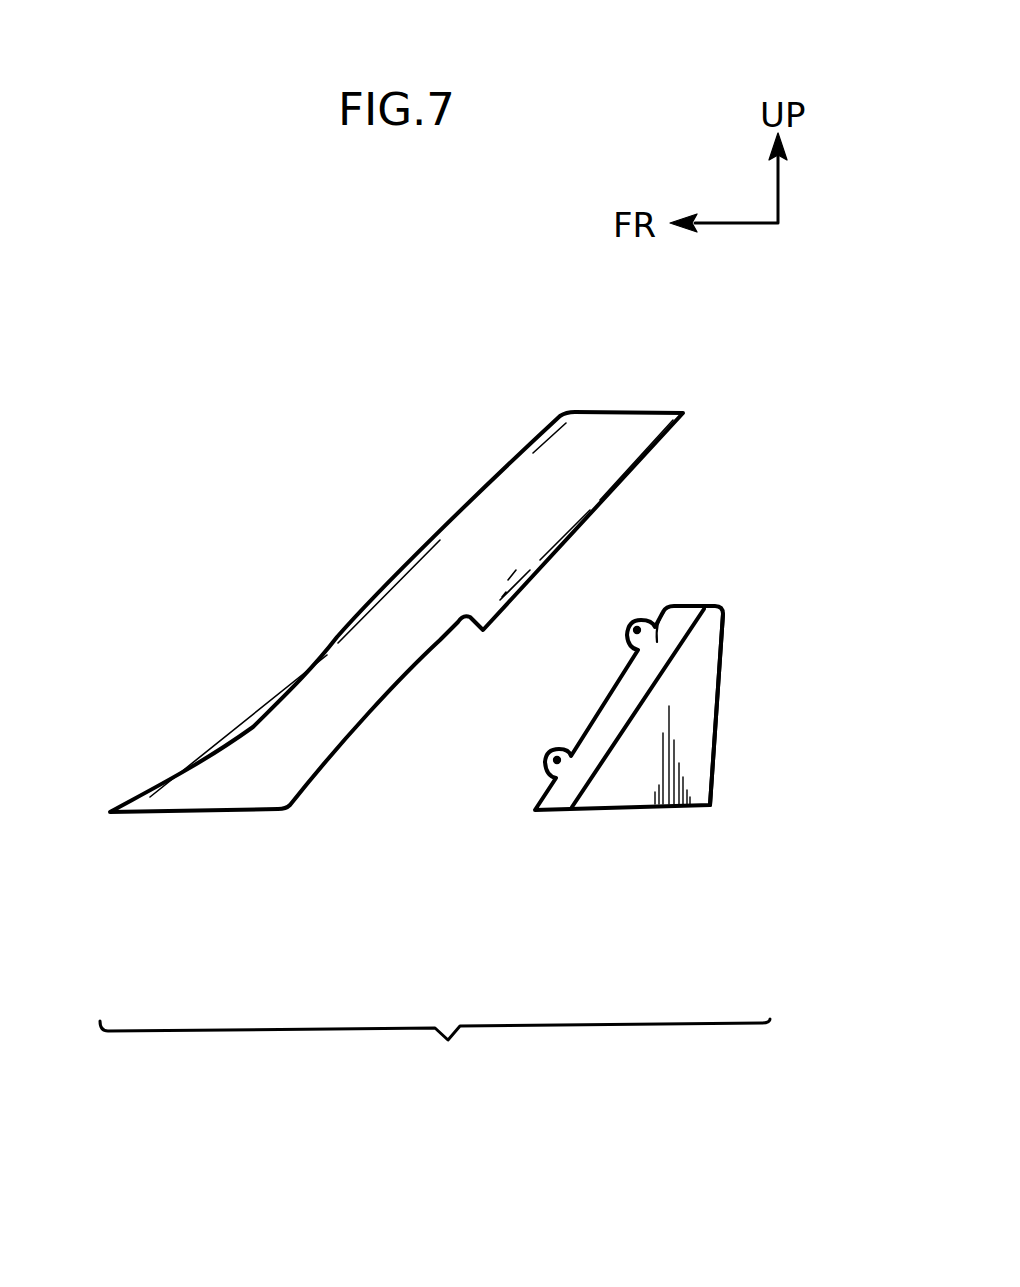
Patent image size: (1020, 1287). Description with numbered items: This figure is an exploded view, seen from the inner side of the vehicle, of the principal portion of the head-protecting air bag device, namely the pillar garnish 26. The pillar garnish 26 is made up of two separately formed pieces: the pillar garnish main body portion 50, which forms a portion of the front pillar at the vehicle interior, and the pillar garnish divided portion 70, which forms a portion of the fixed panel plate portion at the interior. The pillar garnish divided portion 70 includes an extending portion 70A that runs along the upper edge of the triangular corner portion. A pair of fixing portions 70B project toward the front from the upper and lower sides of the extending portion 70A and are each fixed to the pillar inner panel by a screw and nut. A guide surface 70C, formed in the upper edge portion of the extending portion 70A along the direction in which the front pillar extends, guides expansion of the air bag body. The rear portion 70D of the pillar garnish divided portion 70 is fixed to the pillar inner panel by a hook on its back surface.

The pillar garnish 26 is at (527, 928).
The pillar garnish main body portion 50 is at (253, 826).
The pillar garnish divided portion 70 is at (604, 829).
The extending portion 70A is at (598, 722).
The fixing portions 70B is at (633, 622).
The guide surface 70C is at (668, 605).
The rear portion 70D is at (705, 735).